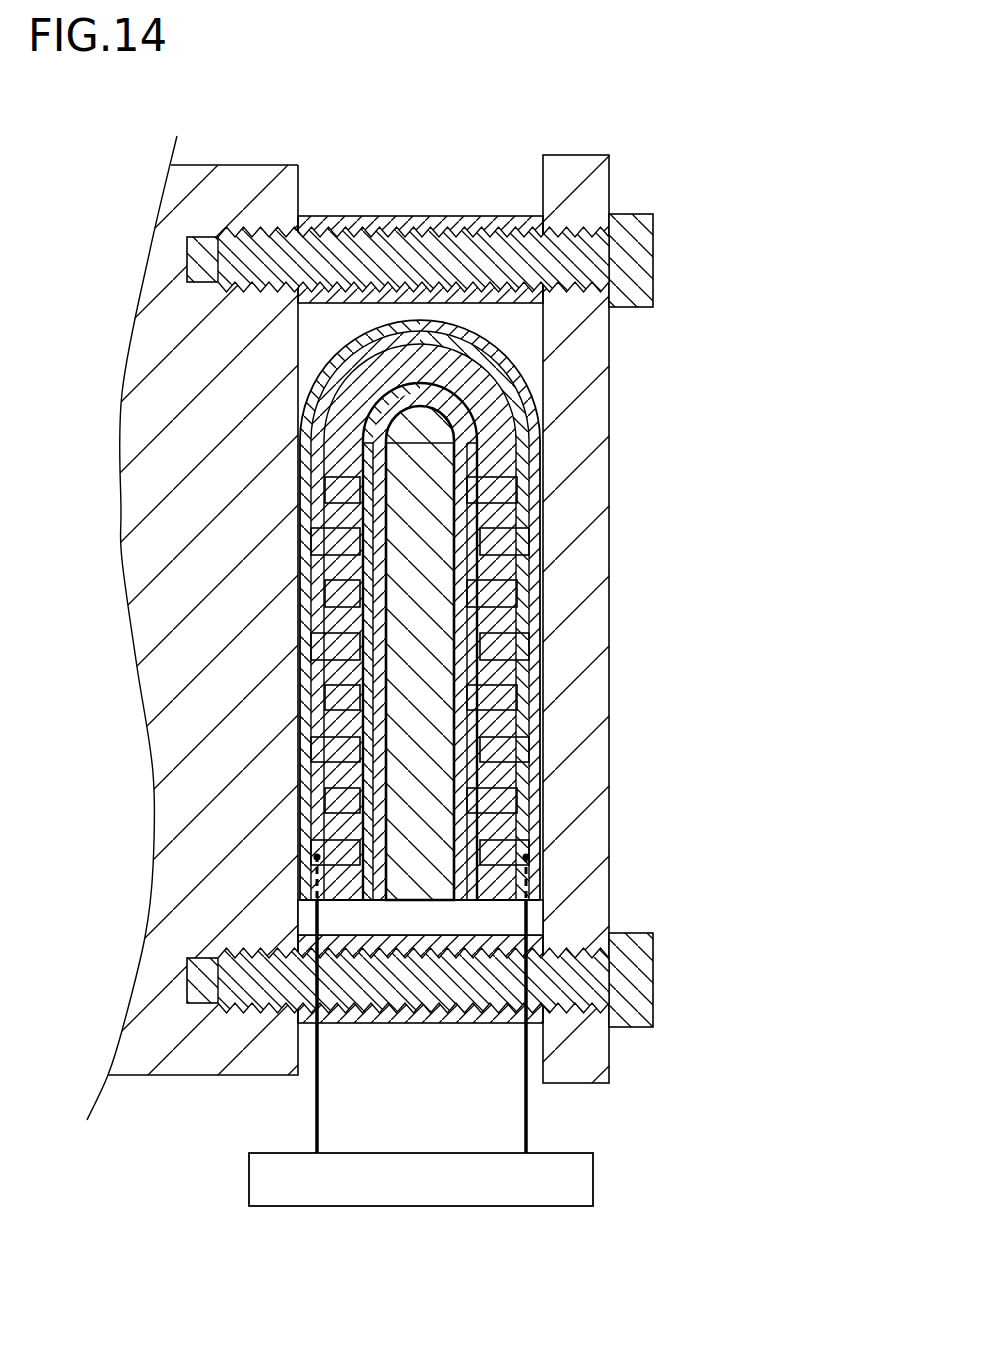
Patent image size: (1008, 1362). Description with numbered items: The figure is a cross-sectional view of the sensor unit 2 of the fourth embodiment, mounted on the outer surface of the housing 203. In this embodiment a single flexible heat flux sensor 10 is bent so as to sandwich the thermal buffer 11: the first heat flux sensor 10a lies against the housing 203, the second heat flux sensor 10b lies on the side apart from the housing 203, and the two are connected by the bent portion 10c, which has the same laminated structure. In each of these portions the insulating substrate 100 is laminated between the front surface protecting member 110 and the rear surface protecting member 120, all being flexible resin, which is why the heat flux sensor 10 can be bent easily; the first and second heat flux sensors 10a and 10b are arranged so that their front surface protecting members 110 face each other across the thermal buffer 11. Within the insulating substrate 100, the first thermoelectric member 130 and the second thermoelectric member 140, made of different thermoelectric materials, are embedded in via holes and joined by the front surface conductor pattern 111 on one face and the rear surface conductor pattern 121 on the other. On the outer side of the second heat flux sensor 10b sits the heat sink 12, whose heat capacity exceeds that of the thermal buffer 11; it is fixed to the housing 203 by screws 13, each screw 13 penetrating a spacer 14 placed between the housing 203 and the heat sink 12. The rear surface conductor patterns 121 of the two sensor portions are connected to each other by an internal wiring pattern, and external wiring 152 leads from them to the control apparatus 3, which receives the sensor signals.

The sensor unit 2 is at (597, 100).
The control apparatus 3 is at (595, 1180).
The heat flux sensor 10 is at (378, 497).
The first heat flux sensor 10a is at (336, 472).
The second heat flux sensor 10b is at (500, 478).
The bent portion 10c is at (368, 345).
The thermal buffer 11 is at (425, 455).
The heat sink 12 is at (560, 190).
The screw 13 is at (630, 295).
The spacer 14 is at (528, 222).
The insulating substrate 100 is at (338, 578).
The front surface protecting member 110 is at (415, 374).
The front surface conductor pattern 111 is at (330, 800).
The rear surface protecting member 120 is at (335, 538).
The rear surface conductor pattern 121 is at (320, 853).
The first thermoelectric member 130 is at (355, 772).
The second thermoelectric member 140 is at (370, 824).
The external wiring 152 is at (315, 1130).
The housing 203 is at (238, 188).